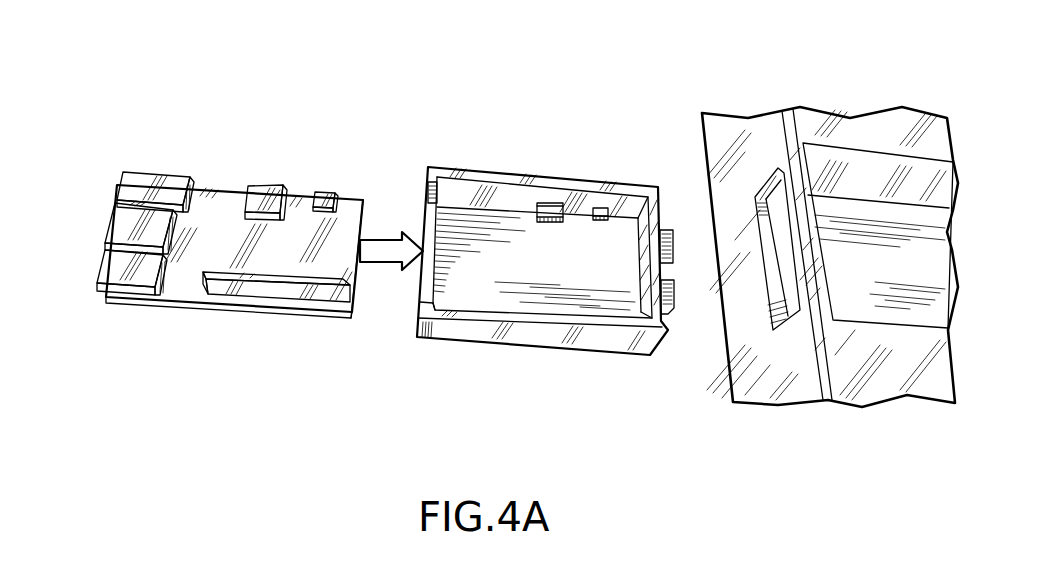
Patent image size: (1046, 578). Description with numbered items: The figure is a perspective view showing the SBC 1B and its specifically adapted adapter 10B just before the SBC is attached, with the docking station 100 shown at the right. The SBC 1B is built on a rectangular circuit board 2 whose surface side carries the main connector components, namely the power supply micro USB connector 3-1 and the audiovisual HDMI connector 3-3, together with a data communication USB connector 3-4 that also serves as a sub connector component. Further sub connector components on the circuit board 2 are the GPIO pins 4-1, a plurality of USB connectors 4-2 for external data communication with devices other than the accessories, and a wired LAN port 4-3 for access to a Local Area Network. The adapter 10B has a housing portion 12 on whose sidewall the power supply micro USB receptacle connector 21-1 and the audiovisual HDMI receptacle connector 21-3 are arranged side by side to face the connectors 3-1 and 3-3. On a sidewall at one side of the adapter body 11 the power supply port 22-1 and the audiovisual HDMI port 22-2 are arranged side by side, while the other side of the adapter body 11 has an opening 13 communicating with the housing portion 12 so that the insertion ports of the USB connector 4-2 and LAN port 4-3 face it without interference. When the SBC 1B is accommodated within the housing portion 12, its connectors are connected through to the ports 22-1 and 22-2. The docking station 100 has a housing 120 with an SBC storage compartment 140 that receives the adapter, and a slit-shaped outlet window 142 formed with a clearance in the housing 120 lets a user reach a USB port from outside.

The SBC 1B is at (154, 306).
The circuit board 2 is at (190, 294).
The power supply micro USB connector 3-1 is at (327, 197).
The audiovisual HDMI connector 3-3 is at (262, 198).
The USB connector 3-4 is at (104, 295).
The GPIO pins 4-1 is at (288, 282).
The USB connectors 4-2 is at (112, 227).
The wired LAN port 4-3 is at (127, 185).
The adapter 10B is at (515, 352).
The adapter body 11 is at (587, 344).
The housing portion 12 is at (477, 295).
The opening 13 is at (428, 193).
The power supply micro USB receptacle connector 21-1 is at (600, 210).
The audiovisual HDMI receptacle connector 21-3 is at (543, 207).
The power supply port 22-1 is at (670, 230).
The audiovisual HDMI port 22-2 is at (675, 314).
The docking station 100 is at (797, 410).
The housing 120 is at (877, 383).
The SBC storage compartment 140 is at (838, 153).
The outlet window 142 is at (767, 189).